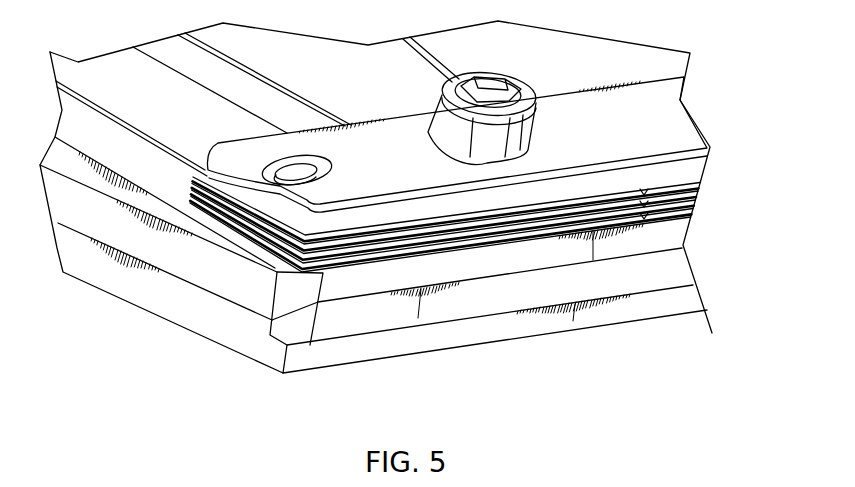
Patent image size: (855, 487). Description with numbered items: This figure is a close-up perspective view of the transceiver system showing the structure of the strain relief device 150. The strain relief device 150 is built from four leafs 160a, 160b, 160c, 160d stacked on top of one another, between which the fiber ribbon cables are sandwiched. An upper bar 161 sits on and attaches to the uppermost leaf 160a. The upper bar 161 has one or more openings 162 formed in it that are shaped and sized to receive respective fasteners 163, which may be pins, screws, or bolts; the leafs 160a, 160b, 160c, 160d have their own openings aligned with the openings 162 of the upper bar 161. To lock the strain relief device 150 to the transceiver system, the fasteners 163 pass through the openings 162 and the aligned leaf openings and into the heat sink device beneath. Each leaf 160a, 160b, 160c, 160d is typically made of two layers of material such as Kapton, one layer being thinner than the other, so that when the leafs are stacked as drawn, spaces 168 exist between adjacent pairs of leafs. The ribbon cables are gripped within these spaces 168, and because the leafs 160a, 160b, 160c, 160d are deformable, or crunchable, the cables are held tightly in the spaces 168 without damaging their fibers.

The strain relief device 150 is at (664, 117).
The upper bar 161 is at (250, 185).
The openings 162 is at (331, 180).
The fasteners 163 is at (290, 168).
The leaf 160a is at (697, 183).
The leaf 160b is at (693, 202).
The leaf 160c is at (693, 213).
The leaf 160d is at (657, 221).
The spaces 168 is at (430, 228).